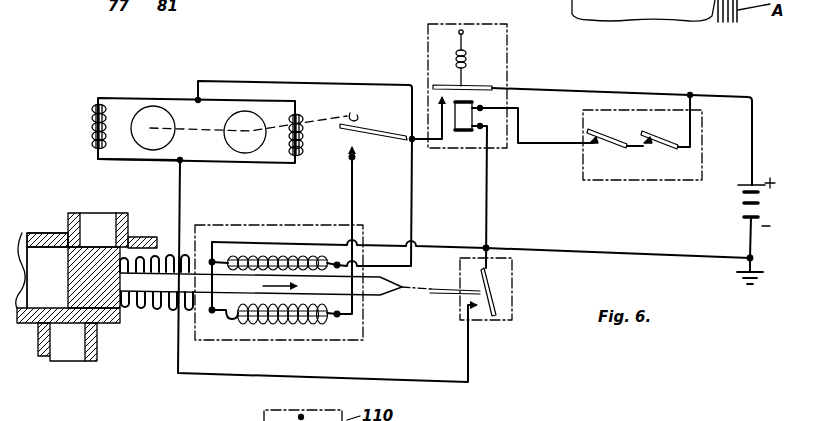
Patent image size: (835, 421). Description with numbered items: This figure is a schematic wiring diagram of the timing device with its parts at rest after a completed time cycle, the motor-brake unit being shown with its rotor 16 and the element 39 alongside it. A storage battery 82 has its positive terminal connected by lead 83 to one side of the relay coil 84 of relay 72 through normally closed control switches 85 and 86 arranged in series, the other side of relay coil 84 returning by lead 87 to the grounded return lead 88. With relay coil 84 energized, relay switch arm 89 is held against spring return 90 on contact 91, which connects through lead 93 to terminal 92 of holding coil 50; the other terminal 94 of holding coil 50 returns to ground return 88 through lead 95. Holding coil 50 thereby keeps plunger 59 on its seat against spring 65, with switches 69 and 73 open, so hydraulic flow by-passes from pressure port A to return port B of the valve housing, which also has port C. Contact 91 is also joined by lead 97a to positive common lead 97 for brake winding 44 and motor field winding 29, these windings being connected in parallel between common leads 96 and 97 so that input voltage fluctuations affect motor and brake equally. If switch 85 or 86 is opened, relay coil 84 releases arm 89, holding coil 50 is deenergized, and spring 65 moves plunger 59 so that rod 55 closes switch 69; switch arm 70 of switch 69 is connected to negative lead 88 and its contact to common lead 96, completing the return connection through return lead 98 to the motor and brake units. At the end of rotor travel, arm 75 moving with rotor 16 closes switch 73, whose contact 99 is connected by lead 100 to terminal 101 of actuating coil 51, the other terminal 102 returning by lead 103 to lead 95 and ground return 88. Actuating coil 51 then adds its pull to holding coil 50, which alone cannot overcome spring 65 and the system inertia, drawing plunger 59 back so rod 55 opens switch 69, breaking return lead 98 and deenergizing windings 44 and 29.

The rotor 16 is at (250, 112).
The motor field winding 29 is at (304, 140).
The cylinder 39 is at (136, 108).
The brake winding 44 is at (91, 126).
The holding coil 50 is at (280, 255).
The actuating coil 51 is at (300, 326).
The rod 55 is at (446, 298).
The plunger 59 is at (402, 297).
The spring 65 is at (143, 306).
The switch 69 is at (513, 286).
The switch arm 70 is at (505, 308).
The relay 72 is at (509, 73).
The switch 73 is at (373, 130).
The arm 75 is at (350, 113).
The storage battery 82 is at (758, 206).
The lead 83 is at (754, 128).
The relay coil 84 is at (463, 132).
The control switch 85 is at (612, 150).
The control switch 86 is at (666, 151).
The lead 87 is at (489, 190).
The grounded return lead 88 is at (560, 250).
The relay switch arm 89 is at (478, 86).
The spring return 90 is at (468, 52).
The contact 91 is at (438, 97).
The terminal 92 is at (336, 258).
The lead 93 is at (410, 212).
The terminal 94 is at (218, 259).
The lead 95 is at (441, 244).
The common lead 96 is at (130, 160).
The positive common lead 97 is at (167, 98).
The lead 97a is at (315, 82).
The return lead 98 is at (182, 193).
The contact 99 is at (356, 153).
The lead 100 is at (351, 183).
The terminal 101 is at (340, 322).
The terminal 102 is at (212, 318).
The lead 103 is at (210, 312).
The pressure port A is at (70, 360).
The return port B is at (36, 252).
The port C is at (100, 213).